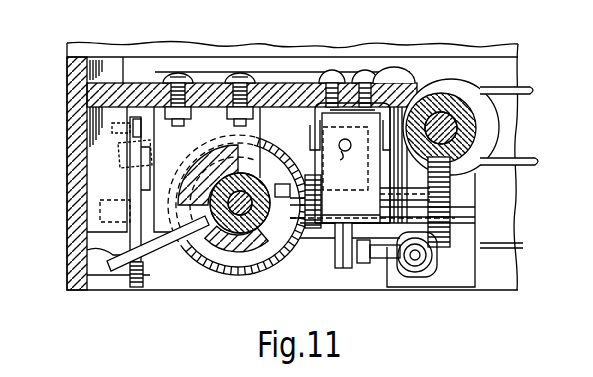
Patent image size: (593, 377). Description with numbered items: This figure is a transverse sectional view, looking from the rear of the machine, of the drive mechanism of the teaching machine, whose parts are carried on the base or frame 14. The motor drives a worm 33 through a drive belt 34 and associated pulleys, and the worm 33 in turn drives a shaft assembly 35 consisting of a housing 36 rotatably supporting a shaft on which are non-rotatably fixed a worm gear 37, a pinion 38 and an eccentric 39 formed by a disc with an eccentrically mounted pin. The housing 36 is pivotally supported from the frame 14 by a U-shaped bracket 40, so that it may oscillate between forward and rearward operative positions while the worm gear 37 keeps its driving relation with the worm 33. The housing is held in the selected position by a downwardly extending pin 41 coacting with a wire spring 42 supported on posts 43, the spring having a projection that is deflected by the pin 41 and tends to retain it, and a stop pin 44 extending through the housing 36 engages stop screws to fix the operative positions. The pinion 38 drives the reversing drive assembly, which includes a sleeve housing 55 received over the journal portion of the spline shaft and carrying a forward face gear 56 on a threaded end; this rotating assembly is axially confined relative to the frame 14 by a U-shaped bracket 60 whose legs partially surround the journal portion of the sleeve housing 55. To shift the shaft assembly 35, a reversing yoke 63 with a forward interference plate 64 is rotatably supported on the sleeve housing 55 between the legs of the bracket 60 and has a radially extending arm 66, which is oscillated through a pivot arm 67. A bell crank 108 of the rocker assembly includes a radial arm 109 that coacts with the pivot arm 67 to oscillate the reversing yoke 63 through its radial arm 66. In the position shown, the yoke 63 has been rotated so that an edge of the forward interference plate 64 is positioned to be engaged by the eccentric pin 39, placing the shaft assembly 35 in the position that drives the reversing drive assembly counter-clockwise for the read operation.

The frame 14 is at (133, 90).
The U-shaped bracket 60 is at (160, 137).
The radial arm 109 is at (147, 168).
The pivot arm 67 is at (133, 183).
The radial arm 66 is at (113, 252).
The reversing yoke 63 is at (218, 258).
The bell crank 108 is at (232, 263).
The forward interference plate 64 is at (268, 252).
The forward face gear 56 is at (283, 266).
The sleeve housing 55 is at (262, 188).
The pinion 38 is at (323, 236).
The eccentric 39 is at (310, 163).
The housing 36 is at (340, 194).
The stop pin 44 is at (345, 152).
The U-shaped bracket 40 is at (382, 107).
The posts 43 is at (407, 117).
The worm 33 is at (472, 130).
The drive belt 34 is at (510, 88).
The shaft assembly 35 is at (456, 220).
The worm gear 37 is at (440, 194).
The pin 41 is at (343, 268).
The spring 42 is at (367, 250).